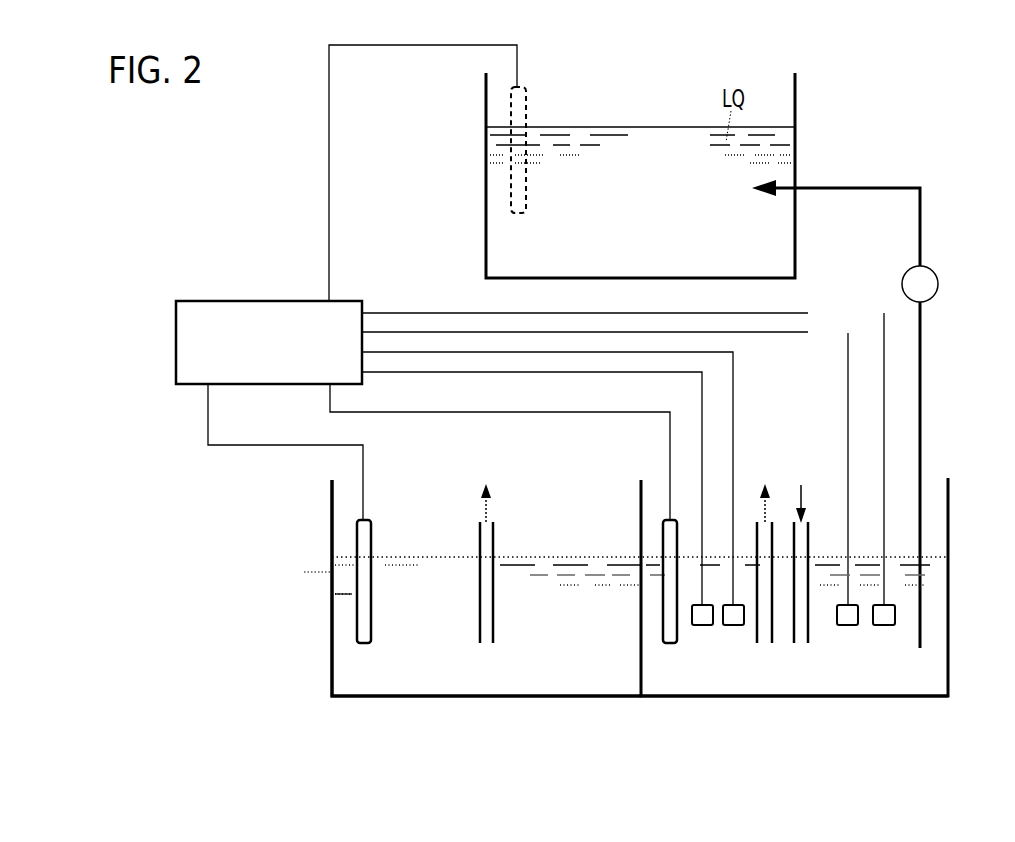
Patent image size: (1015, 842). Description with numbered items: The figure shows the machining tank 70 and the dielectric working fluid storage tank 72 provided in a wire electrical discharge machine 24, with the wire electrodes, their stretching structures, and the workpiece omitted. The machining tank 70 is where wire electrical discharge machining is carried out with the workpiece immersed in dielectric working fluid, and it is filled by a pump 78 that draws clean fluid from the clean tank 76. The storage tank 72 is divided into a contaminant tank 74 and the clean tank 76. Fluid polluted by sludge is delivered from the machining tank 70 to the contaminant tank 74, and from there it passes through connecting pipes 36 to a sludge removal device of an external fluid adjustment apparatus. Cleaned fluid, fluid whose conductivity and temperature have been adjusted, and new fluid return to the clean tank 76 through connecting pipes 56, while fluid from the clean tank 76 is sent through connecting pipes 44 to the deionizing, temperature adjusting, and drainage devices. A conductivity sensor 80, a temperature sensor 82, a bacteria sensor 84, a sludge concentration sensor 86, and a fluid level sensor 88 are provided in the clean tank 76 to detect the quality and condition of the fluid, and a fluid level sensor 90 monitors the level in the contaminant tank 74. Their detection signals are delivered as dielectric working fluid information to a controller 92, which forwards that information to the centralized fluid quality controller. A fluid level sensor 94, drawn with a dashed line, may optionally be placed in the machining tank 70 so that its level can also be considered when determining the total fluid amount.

The wire electrical discharge machine 24 is at (249, 153).
The connecting pipes 36 is at (477, 624).
The connecting pipes 44 is at (775, 637).
The connecting pipes 56 is at (862, 613).
The machining tank 70 is at (798, 150).
The dielectric working fluid storage tank 72 is at (690, 743).
The contaminant tank 74 is at (592, 698).
The clean tank 76 is at (678, 698).
The pump 78 is at (867, 414).
The conductivity sensor 80 is at (730, 626).
The temperature sensor 82 is at (845, 642).
The bacteria sensor 84 is at (886, 642).
The sludge concentration sensor 86 is at (705, 626).
The fluid level sensor 88 is at (672, 644).
The fluid level sensor 90 is at (372, 618).
The controller 92 is at (270, 300).
The fluid level sensor 94 is at (527, 99).